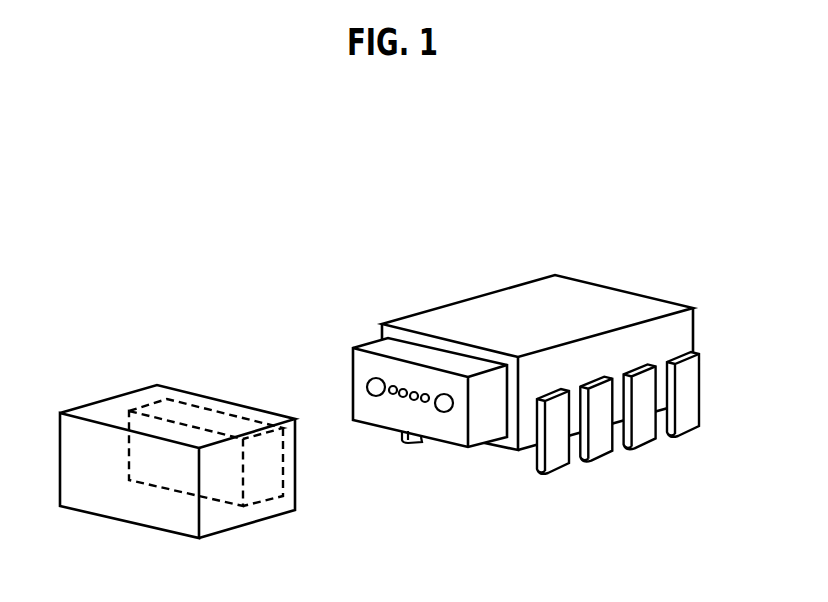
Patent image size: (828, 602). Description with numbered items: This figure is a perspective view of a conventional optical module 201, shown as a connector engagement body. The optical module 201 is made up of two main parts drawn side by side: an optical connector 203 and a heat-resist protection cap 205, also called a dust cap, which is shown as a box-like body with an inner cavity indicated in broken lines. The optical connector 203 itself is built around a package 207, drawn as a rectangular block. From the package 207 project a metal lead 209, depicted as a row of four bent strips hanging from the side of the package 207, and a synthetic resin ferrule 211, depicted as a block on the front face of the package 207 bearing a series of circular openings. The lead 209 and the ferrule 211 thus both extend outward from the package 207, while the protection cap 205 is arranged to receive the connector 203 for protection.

The optical module 201 is at (309, 274).
The optical connector 203 is at (381, 329).
The heat-resist protection cap 205 is at (175, 389).
The package 207 is at (510, 286).
The metal lead 209 is at (646, 436).
The synthetic resin ferrule 211 is at (483, 444).